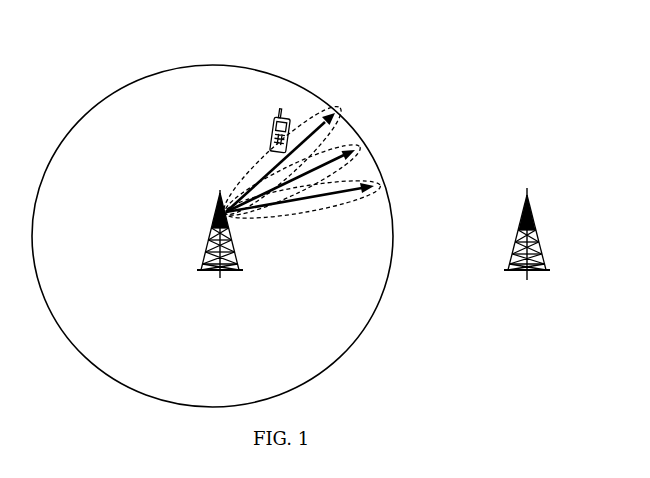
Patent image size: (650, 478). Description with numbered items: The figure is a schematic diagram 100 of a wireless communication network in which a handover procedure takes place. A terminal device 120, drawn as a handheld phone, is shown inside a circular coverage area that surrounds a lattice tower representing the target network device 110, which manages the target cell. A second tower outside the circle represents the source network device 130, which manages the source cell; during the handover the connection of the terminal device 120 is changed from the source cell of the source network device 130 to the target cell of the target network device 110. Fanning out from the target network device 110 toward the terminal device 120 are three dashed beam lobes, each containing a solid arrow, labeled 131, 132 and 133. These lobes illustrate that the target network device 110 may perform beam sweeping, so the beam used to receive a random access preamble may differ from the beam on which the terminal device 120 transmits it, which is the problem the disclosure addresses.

The schematic diagram 100 is at (113, 36).
The target network device 110 is at (206, 248).
The terminal device 120 is at (270, 131).
The source network device 130 is at (513, 251).
The first beam 131 is at (340, 122).
The second beam 132 is at (358, 157).
The third beam 133 is at (372, 198).